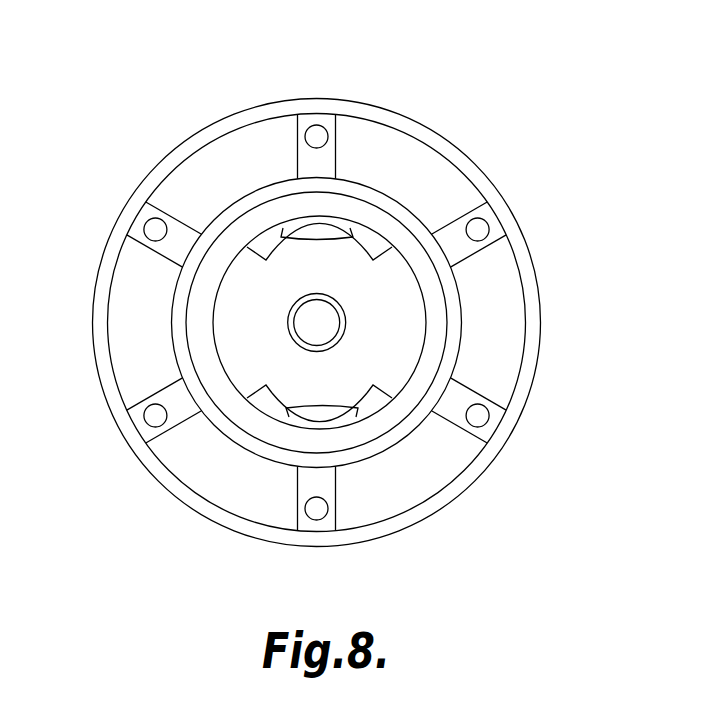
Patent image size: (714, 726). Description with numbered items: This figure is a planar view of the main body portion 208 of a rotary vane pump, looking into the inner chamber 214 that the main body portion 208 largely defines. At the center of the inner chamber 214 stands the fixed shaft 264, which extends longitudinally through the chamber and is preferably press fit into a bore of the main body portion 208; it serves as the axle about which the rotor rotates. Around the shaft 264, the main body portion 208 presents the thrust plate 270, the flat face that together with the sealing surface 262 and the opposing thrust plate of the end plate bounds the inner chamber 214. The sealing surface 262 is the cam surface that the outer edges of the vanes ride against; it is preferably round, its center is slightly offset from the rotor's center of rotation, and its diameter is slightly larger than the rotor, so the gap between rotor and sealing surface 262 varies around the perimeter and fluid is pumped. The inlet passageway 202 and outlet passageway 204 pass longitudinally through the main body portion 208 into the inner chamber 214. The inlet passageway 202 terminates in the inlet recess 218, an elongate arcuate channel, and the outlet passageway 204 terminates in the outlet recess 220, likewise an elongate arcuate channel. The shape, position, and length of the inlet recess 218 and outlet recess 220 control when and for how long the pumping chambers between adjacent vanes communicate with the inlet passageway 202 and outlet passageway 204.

The inlet passageway 202 is at (352, 405).
The outlet passageway 204 is at (262, 236).
The main body portion 208 is at (543, 236).
The inner chamber 214 is at (398, 366).
The inlet recess 218 is at (245, 392).
The outlet recess 220 is at (385, 255).
The sealing surface 262 is at (419, 286).
The fixed shaft 264 is at (318, 292).
The thrust plate 270 is at (237, 288).